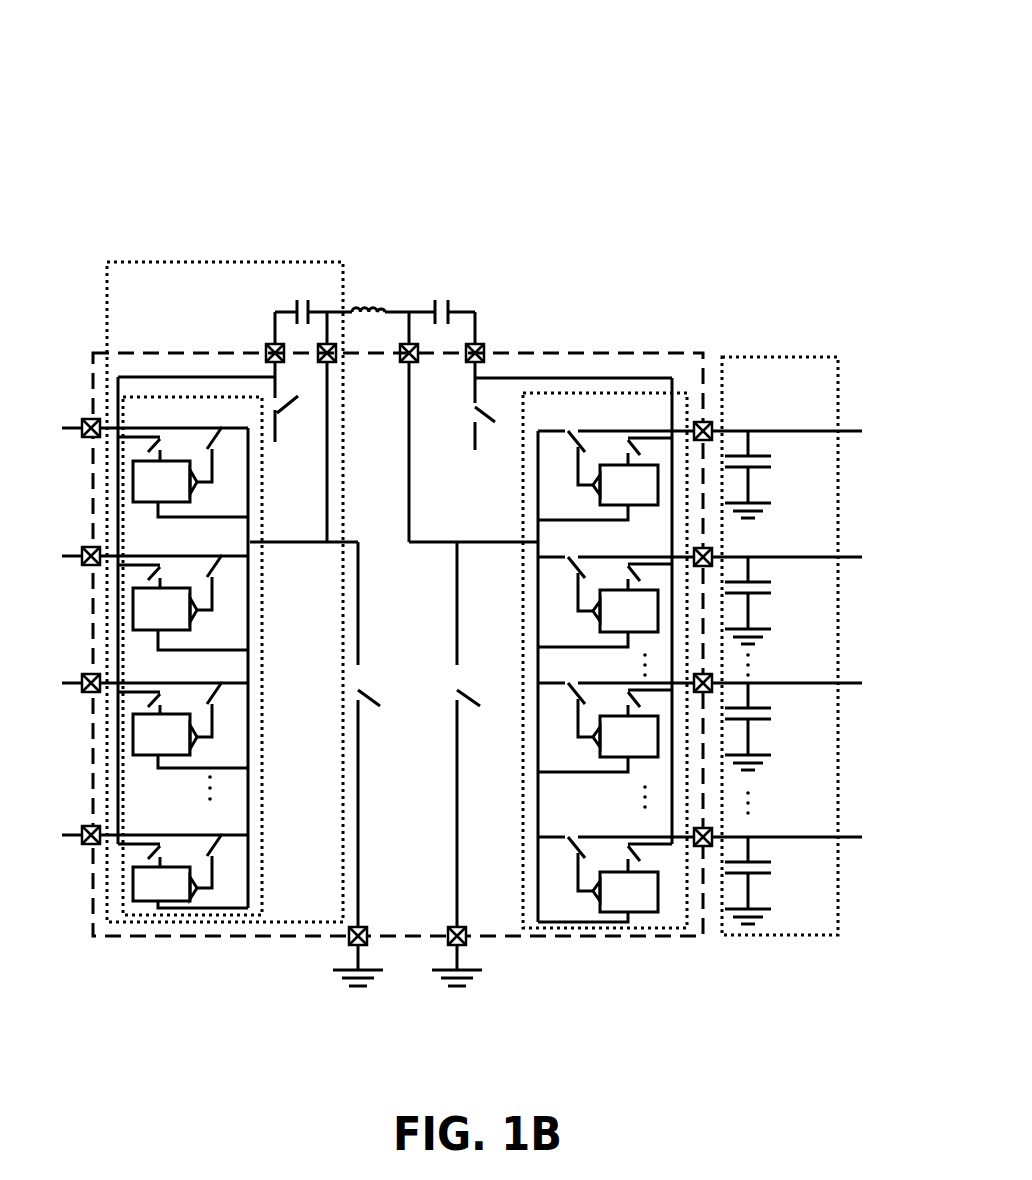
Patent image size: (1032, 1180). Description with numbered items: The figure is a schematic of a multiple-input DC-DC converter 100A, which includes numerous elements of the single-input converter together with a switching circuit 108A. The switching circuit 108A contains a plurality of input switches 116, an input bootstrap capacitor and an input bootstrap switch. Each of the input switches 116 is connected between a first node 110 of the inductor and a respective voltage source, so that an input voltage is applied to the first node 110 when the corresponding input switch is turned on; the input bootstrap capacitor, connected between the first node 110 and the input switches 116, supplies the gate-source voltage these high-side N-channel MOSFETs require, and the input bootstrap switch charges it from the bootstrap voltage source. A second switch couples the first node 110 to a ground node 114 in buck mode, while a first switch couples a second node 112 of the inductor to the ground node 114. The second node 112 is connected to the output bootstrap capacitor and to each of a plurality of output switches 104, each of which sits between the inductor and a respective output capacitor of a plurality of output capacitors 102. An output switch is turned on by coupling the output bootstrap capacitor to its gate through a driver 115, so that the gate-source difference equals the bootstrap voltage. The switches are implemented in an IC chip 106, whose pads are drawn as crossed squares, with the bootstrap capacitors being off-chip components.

The DC-DC converter 100A is at (908, 52).
The plurality of output capacitors 102 is at (737, 357).
The plurality of output switches 104 is at (640, 392).
The IC chip 106 is at (598, 352).
The switching circuit 108A is at (183, 262).
The first node 110 is at (330, 545).
The second node 112 is at (450, 545).
The ground node 114 is at (457, 928).
The driver 115 is at (592, 748).
The plurality of input switches 116 is at (260, 698).